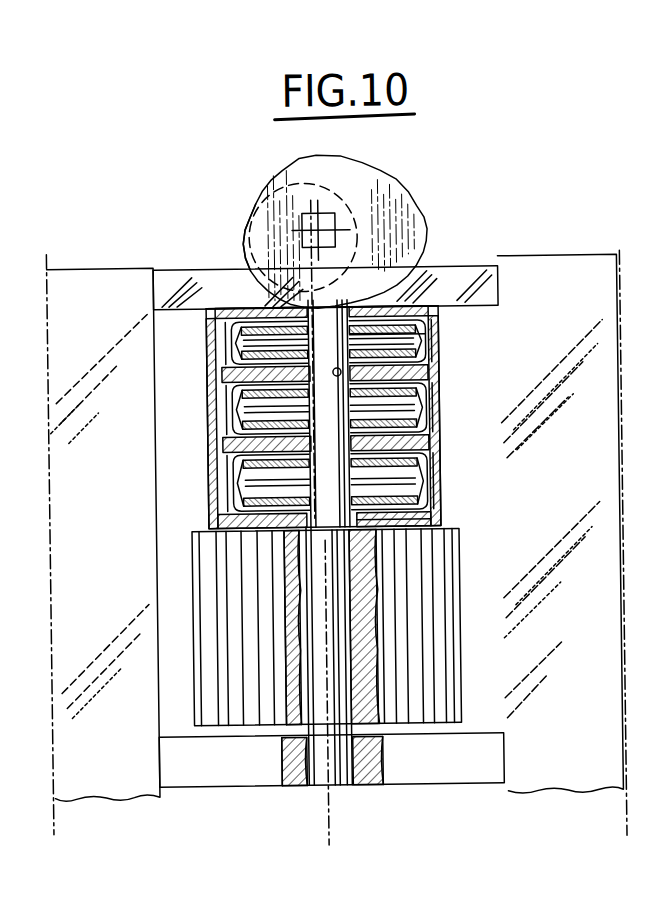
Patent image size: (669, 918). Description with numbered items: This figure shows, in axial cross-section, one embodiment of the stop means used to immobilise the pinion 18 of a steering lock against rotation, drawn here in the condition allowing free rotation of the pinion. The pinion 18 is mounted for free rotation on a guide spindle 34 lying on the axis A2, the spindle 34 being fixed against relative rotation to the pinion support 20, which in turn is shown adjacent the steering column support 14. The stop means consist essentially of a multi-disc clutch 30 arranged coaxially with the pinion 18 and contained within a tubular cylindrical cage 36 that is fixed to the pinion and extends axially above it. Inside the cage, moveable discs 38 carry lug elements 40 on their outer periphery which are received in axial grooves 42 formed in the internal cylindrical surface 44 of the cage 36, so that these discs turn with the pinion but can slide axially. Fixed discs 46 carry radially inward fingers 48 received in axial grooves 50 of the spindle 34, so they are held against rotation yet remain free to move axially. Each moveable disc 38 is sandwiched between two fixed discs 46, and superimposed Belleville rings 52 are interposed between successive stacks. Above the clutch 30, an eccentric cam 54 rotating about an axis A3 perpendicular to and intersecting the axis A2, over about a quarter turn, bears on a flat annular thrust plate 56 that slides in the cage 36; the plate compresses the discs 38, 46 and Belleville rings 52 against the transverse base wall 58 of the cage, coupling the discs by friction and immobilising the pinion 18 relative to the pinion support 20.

The steering column support 14 is at (104, 288).
The pinion 18 is at (243, 625).
The pinion support 20 is at (446, 277).
The multi-disc clutch 30 is at (454, 432).
The guide spindle 34 is at (309, 678).
The tubular cylindrical cage 36 is at (443, 472).
The moveable discs 38 is at (443, 442).
The lug elements 40 is at (214, 412).
The axial grooves 42 is at (214, 465).
The internal cylindrical surface 44 is at (216, 328).
The fixed discs 46 is at (443, 507).
The fingers 48 is at (430, 371).
The axial grooves 50 is at (234, 475).
The Belleville rings 52 is at (440, 337).
The cam 54 is at (400, 196).
The thrust plate 56 is at (266, 305).
The transverse base wall 58 is at (247, 519).
The axis A2 is at (325, 821).
The axis A3 is at (306, 230).